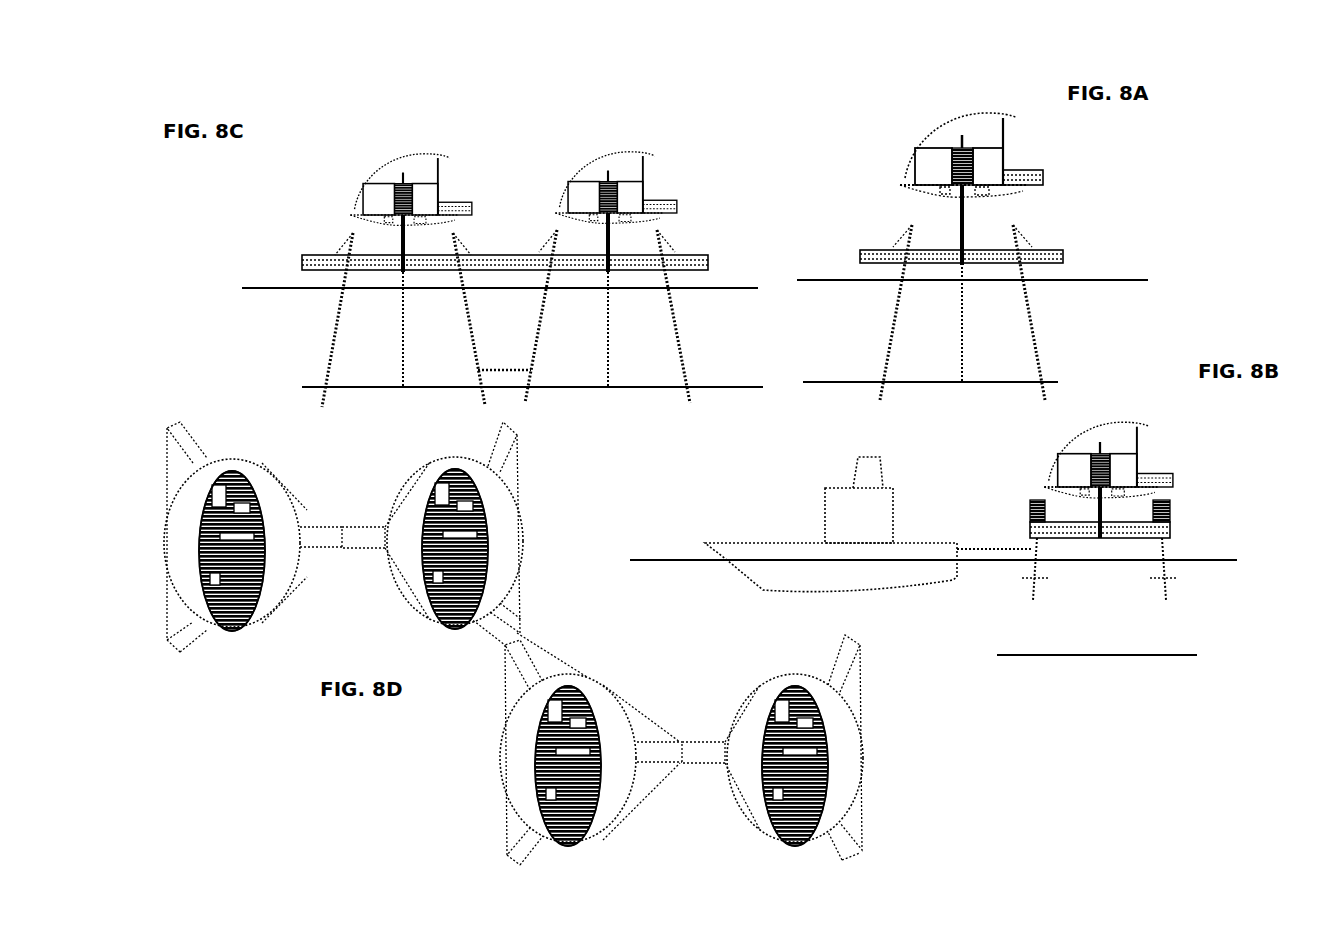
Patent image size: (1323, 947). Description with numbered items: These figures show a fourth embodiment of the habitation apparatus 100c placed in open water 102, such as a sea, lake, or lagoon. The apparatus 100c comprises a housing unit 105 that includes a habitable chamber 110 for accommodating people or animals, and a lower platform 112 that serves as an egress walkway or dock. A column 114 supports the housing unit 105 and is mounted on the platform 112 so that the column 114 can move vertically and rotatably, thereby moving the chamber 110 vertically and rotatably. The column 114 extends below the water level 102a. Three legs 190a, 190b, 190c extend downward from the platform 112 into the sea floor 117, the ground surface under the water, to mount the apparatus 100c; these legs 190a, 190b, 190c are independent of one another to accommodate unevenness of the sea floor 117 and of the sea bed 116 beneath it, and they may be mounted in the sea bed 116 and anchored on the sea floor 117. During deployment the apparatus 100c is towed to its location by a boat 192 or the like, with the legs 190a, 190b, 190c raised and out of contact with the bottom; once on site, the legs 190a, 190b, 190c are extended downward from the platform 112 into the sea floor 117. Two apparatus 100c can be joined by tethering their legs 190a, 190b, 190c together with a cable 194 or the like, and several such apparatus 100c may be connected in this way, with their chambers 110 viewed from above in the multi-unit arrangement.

In FIG. 8A, the apparatus 100c is at (931, 109).
In FIG. 8C, the apparatus 100c is at (505, 128).
In FIG. 8B, the apparatus 100c is at (1101, 419).
In FIG. 8D, the apparatus 100c is at (517, 652).
In FIG. 8A, the housing unit 105 is at (872, 143).
In FIG. 8C, the housing unit 105 is at (314, 190).
In FIG. 8B, the housing unit 105 is at (1038, 440).
In FIG. 8D, the housing unit 105 is at (260, 507).
In FIG. 8A, the habitable chamber 110 is at (1023, 151).
In FIG. 8C, the habitable chamber 110 is at (457, 181).
In FIG. 8B, the habitable chamber 110 is at (1153, 452).
In FIG. 8D, the habitable chamber 110 is at (242, 638).
In FIG. 8A, the platform 112 is at (1063, 252).
In FIG. 8C, the platform 112 is at (300, 261).
In FIG. 8B, the platform 112 is at (1170, 527).
In FIG. 8D, the platform 112 is at (173, 543).
In FIG. 8A, the column 114 is at (967, 225).
In FIG. 8A, the open water 102 is at (841, 321).
In FIG. 8C, the open water 102 is at (729, 336).
In FIG. 8B, the open water 102 is at (1116, 604).
In FIG. 8A, the water level 102a is at (840, 282).
In FIG. 8B, the water level 102a is at (680, 558).
In FIG. 8A, the sea floor 117 is at (857, 380).
In FIG. 8C, the sea floor 117 is at (652, 383).
In FIG. 8B, the sea floor 117 is at (1108, 655).
In FIG. 8A, the sea bed 116 is at (829, 428).
In FIG. 8C, the sea bed 116 is at (652, 431).
In FIG. 8B, the sea bed 116 is at (1162, 694).
In FIG. 8A, the leg 190a is at (965, 290).
In FIG. 8C, the leg 190a is at (400, 317).
In FIG. 8A, the leg 190b is at (888, 358).
In FIG. 8C, the leg 190b is at (333, 338).
In FIG. 8A, the leg 190c is at (1035, 355).
In FIG. 8C, the leg 190c is at (463, 307).
In FIG. 8C, the cable 194 is at (515, 367).
In FIG. 8B, the boat 192 is at (871, 531).